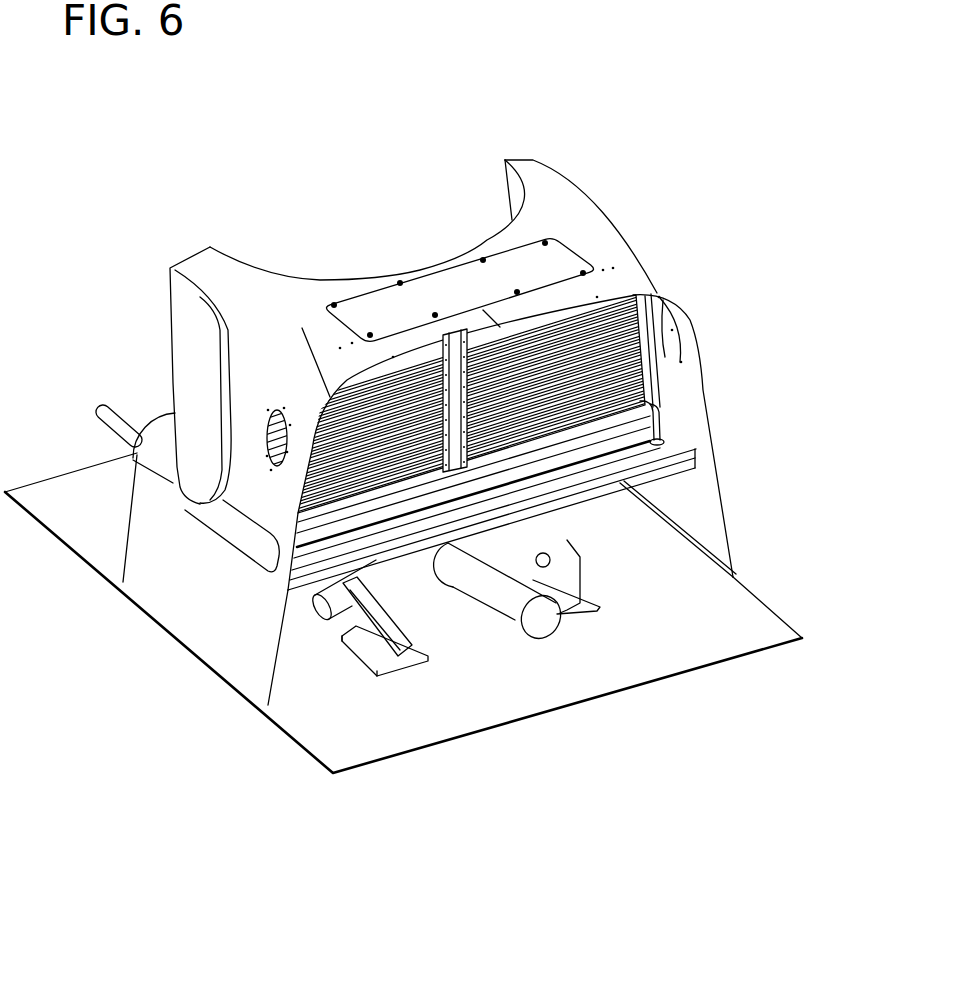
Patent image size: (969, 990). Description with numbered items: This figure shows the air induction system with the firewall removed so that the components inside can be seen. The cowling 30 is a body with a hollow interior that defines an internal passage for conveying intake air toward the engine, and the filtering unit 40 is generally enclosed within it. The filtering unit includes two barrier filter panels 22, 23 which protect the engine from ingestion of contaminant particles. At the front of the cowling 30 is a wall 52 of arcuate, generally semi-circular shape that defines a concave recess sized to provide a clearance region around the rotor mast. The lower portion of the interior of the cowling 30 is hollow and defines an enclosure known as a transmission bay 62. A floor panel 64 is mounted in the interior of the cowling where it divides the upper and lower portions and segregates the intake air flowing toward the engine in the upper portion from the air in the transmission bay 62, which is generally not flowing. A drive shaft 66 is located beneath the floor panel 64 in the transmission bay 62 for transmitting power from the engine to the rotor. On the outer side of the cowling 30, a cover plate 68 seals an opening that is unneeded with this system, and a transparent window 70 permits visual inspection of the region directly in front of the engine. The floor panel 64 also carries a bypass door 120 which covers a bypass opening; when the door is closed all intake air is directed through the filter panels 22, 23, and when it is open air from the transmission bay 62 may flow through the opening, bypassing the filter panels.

The barrier filter panel 22 is at (302, 328).
The barrier filter panel 23 is at (647, 333).
The cowling 30 is at (570, 178).
The filtering unit 40 is at (662, 370).
The front wall 52 is at (507, 187).
The transmission bay 62 is at (650, 525).
The floor panel 64 is at (640, 445).
The drive shaft 66 is at (513, 622).
The cover plate 68 is at (230, 540).
The window 70 is at (267, 430).
The bypass door 120 is at (380, 537).